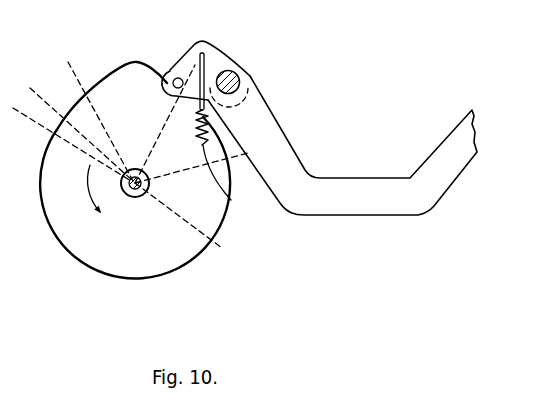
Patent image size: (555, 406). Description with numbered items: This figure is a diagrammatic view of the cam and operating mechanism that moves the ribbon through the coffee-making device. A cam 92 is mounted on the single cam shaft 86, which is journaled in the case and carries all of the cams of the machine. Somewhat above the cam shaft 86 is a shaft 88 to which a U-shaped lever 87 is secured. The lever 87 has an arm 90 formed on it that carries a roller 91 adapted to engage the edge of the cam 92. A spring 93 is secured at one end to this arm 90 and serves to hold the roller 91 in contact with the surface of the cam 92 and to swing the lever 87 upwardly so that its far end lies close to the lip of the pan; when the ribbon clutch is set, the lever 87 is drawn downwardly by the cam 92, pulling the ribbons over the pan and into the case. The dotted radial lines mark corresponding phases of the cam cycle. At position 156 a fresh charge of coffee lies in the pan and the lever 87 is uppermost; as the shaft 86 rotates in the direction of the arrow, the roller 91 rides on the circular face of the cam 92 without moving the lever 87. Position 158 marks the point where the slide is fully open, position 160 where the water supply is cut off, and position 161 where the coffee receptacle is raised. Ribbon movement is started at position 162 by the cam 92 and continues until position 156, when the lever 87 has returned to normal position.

The cam shaft 86 is at (134, 197).
The U-shaped lever 87 is at (287, 142).
The shaft 88 is at (240, 80).
The arm 90 is at (189, 56).
The roller 91 is at (169, 72).
The cam 92 is at (199, 252).
The spring 93 is at (231, 200).
The position 156 is at (168, 116).
The position 158 is at (178, 172).
The position 160 is at (72, 146).
The position 161 is at (30, 86).
The position 162 is at (74, 63).